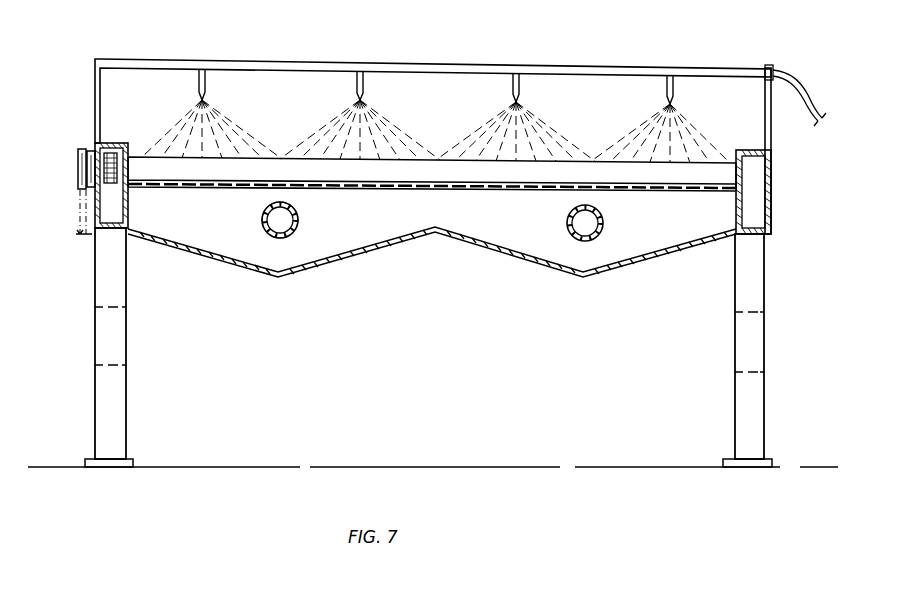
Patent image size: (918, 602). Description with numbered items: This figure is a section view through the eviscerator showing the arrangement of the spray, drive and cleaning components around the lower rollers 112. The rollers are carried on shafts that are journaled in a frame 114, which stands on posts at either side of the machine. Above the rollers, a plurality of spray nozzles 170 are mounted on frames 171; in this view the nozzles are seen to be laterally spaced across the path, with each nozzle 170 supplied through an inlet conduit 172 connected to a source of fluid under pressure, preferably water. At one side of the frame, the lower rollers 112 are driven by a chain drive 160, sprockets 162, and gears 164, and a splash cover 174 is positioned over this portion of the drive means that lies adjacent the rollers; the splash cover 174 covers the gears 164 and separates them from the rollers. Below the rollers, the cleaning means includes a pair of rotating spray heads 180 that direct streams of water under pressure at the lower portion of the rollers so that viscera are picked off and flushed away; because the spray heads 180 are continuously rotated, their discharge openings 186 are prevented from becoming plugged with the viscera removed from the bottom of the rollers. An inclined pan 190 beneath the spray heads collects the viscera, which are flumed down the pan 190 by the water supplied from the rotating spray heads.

The lower roller 112 is at (458, 172).
The frame 114 is at (126, 422).
The chain drive 160 is at (77, 226).
The sprockets 162 is at (78, 168).
The gears 164 is at (100, 192).
The spray nozzles 170 is at (355, 91).
The frames 171 is at (95, 72).
The inlet conduit 172 is at (803, 93).
The splash cover 174 is at (116, 143).
The rotating spray heads 180 is at (298, 228).
The discharge openings 186 is at (297, 207).
The inclined pan 190 is at (398, 242).